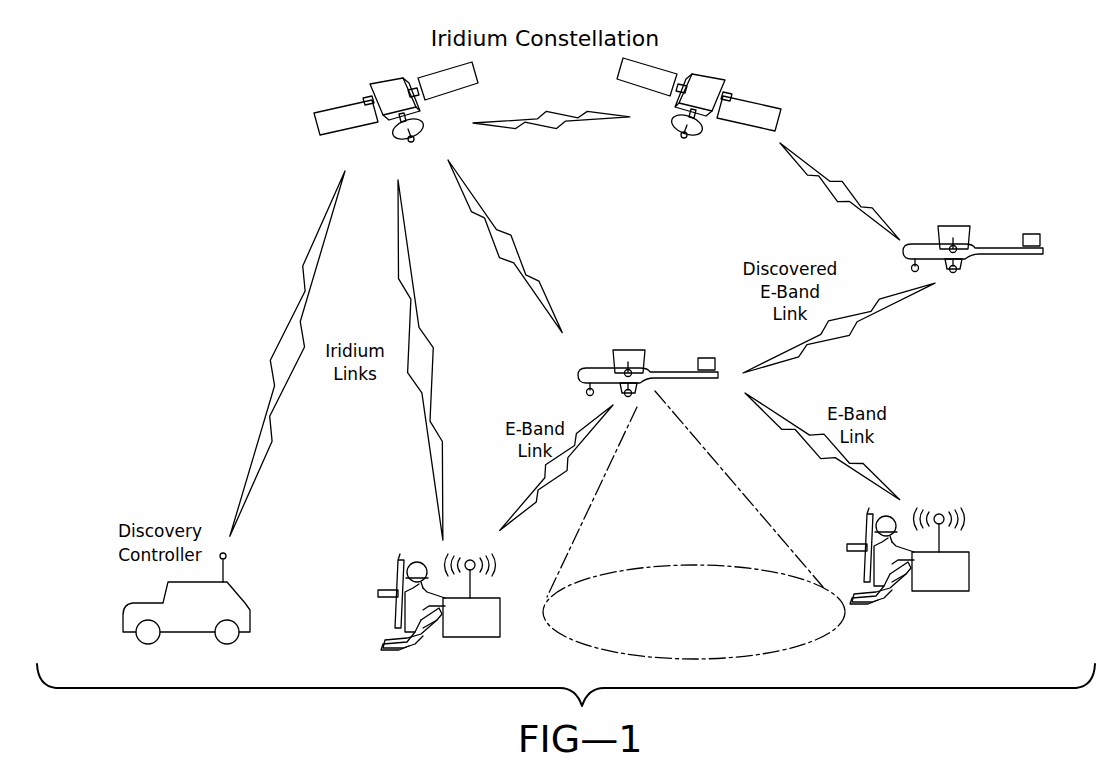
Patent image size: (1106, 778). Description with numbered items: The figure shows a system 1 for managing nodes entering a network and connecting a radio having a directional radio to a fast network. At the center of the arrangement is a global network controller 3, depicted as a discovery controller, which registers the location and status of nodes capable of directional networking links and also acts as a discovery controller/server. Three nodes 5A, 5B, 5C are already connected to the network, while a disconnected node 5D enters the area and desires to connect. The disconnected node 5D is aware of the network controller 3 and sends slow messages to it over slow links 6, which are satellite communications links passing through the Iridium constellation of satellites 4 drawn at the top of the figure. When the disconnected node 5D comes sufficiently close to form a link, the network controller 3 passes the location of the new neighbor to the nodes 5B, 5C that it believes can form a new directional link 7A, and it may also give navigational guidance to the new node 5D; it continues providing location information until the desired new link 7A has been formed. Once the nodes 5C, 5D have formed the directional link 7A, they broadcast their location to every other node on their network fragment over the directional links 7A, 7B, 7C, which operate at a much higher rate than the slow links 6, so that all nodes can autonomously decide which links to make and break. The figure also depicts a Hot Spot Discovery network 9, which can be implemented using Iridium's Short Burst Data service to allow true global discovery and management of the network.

The system 1 is at (943, 91).
The global network controller 3 is at (138, 604).
The Iridium constellation of satellites 4 is at (388, 86).
The node 5A is at (470, 631).
The node 5B is at (940, 586).
The node 5C is at (668, 371).
The disconnected node 5D is at (997, 247).
The slow links 6 is at (536, 131).
The directional link 7A is at (872, 331).
The directional link 7B is at (800, 438).
The directional link 7C is at (515, 468).
The Hot Spot Discovery network 9 is at (701, 565).